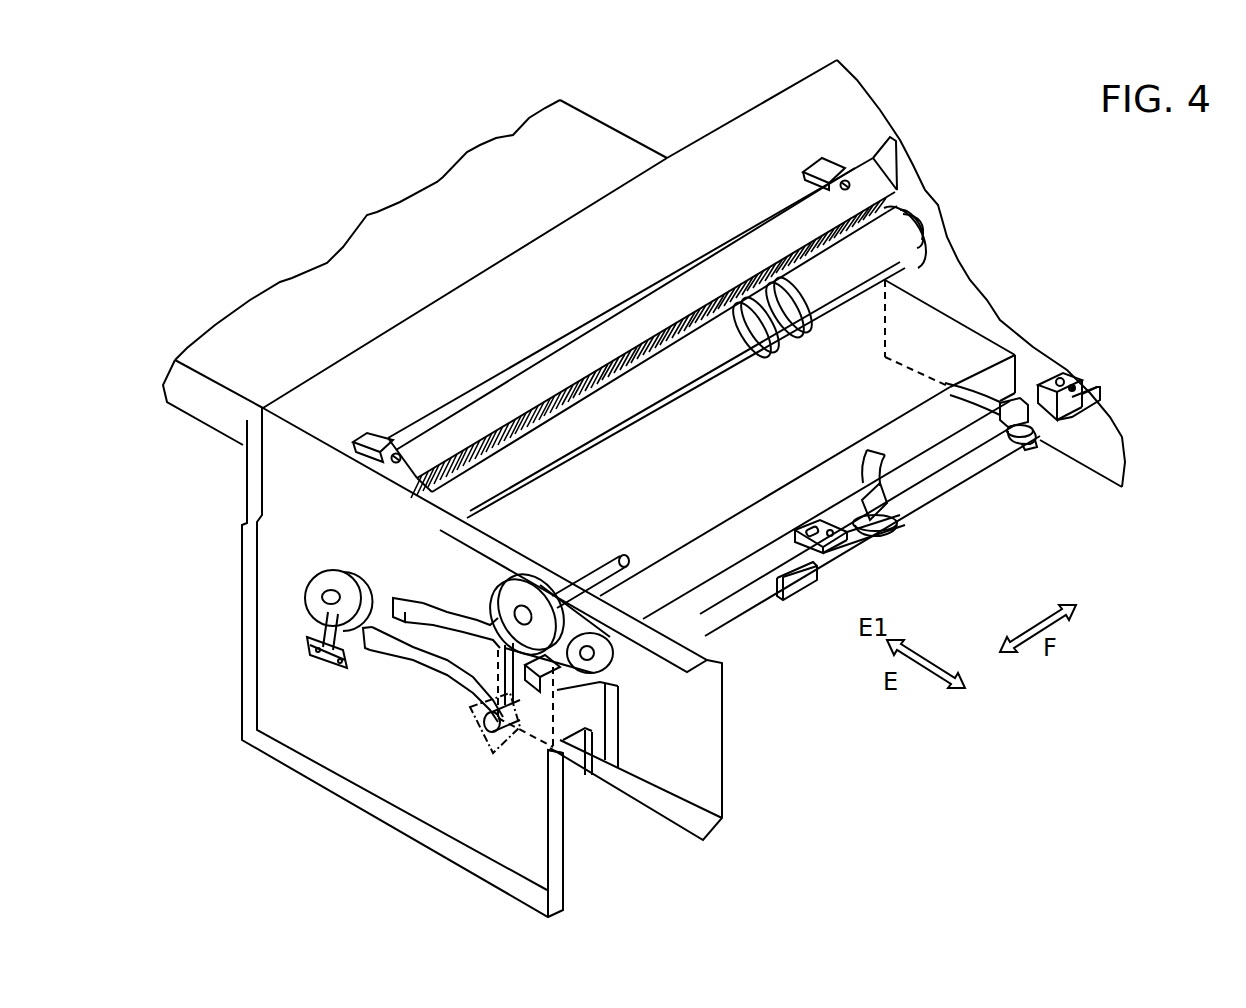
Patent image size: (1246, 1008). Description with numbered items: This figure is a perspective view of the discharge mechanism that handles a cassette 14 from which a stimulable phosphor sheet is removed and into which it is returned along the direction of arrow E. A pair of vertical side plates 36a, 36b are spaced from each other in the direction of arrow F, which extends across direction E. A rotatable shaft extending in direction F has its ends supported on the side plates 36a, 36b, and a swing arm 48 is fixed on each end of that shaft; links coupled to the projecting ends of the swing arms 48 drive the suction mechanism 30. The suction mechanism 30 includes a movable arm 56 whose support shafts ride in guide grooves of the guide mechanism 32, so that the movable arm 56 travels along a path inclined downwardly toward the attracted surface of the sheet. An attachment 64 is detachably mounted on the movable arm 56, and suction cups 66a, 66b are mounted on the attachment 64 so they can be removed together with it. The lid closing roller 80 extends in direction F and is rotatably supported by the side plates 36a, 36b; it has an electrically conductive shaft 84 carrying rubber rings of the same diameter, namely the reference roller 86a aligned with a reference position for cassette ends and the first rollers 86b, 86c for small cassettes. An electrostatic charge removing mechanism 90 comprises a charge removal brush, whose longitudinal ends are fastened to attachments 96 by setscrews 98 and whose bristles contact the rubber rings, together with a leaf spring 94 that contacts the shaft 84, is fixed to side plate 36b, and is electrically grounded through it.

The cassette 14 is at (573, 146).
The suction mechanism 30 is at (932, 543).
The guide mechanism 32 is at (418, 695).
The side plate 36a is at (985, 322).
The side plate 36b is at (410, 793).
The swing arm 48 is at (545, 577).
The movable arm 56 is at (711, 548).
The attachment 64 is at (952, 488).
The suction cup 66a is at (1037, 448).
The suction cup 66b is at (883, 543).
The lid closing roller 80 is at (690, 394).
The shaft 84 is at (598, 440).
The reference roller 86a is at (925, 232).
The first roller 86b is at (797, 332).
The first roller 86c is at (760, 348).
The electrostatic charge removing mechanism 90 is at (622, 330).
The leaf spring 94 is at (300, 624).
The attachment 96 is at (833, 168).
The setscrew 98 is at (850, 178).